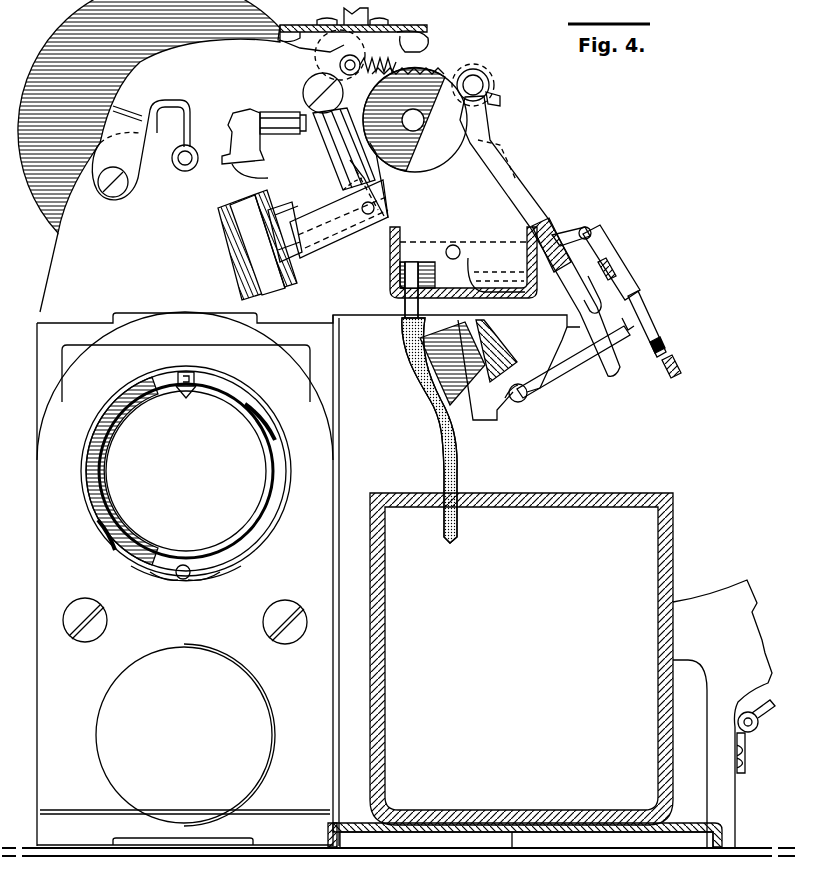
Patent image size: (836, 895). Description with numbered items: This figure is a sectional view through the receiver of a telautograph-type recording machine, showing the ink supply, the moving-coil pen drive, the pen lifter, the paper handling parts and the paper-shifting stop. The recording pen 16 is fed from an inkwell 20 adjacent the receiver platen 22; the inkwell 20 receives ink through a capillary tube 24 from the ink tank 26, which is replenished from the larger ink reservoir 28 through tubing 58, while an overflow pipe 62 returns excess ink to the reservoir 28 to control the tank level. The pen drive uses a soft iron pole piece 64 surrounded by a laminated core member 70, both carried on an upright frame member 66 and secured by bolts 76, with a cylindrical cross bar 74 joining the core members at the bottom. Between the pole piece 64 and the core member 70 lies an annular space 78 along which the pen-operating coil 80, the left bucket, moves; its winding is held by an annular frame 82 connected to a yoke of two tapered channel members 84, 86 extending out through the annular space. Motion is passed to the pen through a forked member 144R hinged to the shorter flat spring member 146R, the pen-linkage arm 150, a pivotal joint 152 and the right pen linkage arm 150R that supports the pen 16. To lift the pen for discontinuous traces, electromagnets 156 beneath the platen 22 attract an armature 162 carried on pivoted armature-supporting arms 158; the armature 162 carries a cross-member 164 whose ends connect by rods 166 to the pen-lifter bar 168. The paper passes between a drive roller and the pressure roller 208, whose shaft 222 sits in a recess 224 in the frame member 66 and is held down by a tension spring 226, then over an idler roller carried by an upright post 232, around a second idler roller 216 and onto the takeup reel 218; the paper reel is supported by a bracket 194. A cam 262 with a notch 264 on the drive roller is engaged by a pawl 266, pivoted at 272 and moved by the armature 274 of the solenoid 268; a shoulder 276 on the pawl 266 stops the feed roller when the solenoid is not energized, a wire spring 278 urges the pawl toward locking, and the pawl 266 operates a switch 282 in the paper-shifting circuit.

The recording pen 16 is at (568, 238).
The inkwell 20 is at (548, 232).
The receiver platen 22 is at (486, 137).
The capillary tube 24 is at (513, 268).
The ink tank 26 is at (390, 250).
The ink reservoir 28 is at (673, 566).
The tubing 58 is at (453, 245).
The overflow pipe 62 is at (445, 447).
The pole piece 64 is at (196, 462).
The upright frame member 66 is at (62, 300).
The laminated core member 70 is at (46, 576).
The cylindrical cross bar 74 is at (196, 726).
The bolt 76 is at (88, 632).
The annular space 78 is at (208, 585).
The pen-operating coil 80 is at (154, 578).
The annular frame 82 is at (102, 423).
The tapered channel member 84 is at (283, 404).
The tapered channel member 86 is at (90, 527).
The forked member 144R is at (678, 374).
The shorter flat spring member 146R is at (660, 366).
The pen-linkage arm 150 is at (604, 268).
The right pen linkage arm 150R is at (655, 322).
The pivotal joint 152 is at (594, 238).
The electromagnet 156 is at (492, 350).
The armature-supporting arm 158 is at (480, 330).
The armature 162 is at (487, 422).
The cross-member 164 is at (523, 398).
The rod 166 is at (578, 368).
The pen-lifter bar 168 is at (630, 326).
The bracket 194 is at (743, 604).
The pressure roller 208 is at (491, 81).
The idler roller 216 is at (330, 52).
The takeup reel 218 is at (97, 64).
The shaft 222 is at (477, 72).
The recess 224 is at (501, 97).
The tension spring 226 is at (360, 65).
The upright post 232 is at (372, 16).
The cam 262 is at (410, 92).
The notch 264 is at (388, 146).
The pawl 266 is at (330, 136).
The solenoid 268 is at (237, 234).
The pivot 272 is at (318, 92).
The armature 274 is at (338, 222).
The shoulder 276 is at (381, 158).
The wire spring 278 is at (312, 93).
The switch 282 is at (240, 128).